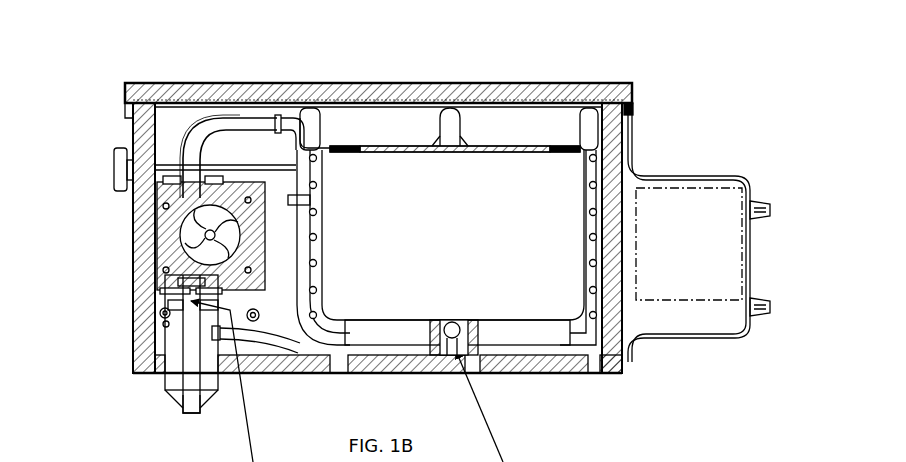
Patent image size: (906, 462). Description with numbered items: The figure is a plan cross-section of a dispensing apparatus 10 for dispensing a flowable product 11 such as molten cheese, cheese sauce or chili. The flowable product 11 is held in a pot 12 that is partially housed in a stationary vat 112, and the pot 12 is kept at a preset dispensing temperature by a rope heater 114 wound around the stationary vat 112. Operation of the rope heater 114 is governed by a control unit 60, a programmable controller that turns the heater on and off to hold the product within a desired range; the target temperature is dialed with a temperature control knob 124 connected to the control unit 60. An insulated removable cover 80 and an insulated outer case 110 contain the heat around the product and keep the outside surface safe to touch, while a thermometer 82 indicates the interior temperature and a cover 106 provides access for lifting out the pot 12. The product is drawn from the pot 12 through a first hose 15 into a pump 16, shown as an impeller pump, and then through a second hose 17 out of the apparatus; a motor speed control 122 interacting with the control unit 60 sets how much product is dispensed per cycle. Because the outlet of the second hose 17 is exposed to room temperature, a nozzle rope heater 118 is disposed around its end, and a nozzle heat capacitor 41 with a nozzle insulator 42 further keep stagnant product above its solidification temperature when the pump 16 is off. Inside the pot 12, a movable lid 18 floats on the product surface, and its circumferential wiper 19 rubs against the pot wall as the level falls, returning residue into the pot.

The dispensing apparatus 10 is at (644, 42).
The flowable product 11 is at (470, 200).
The pot 12 is at (580, 208).
The first hose 15 is at (233, 117).
The pump 16 is at (194, 243).
The second hose 17 is at (193, 367).
The movable lid 18 is at (501, 140).
The wiper 19 is at (336, 145).
The nozzle heat capacitor 41 is at (174, 388).
The nozzle insulator 42 is at (213, 406).
The control unit 60 is at (690, 205).
The insulated removable cover 80 is at (171, 83).
The thermometer 82 is at (111, 171).
The cover 106 is at (636, 108).
The insulated outer case 110 is at (131, 243).
The stationary vat 112 is at (533, 350).
The rope heater 114 is at (599, 319).
The nozzle rope heater 118 is at (161, 337).
The motor speed control 122 is at (767, 229).
The temperature control knob 124 is at (767, 326).